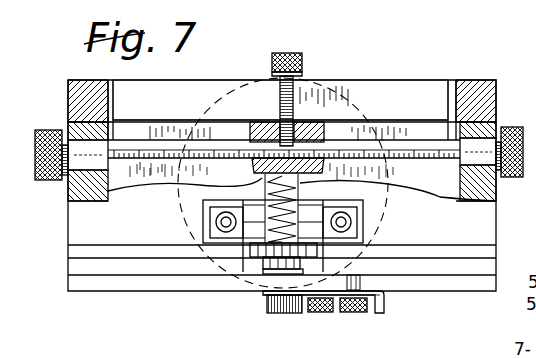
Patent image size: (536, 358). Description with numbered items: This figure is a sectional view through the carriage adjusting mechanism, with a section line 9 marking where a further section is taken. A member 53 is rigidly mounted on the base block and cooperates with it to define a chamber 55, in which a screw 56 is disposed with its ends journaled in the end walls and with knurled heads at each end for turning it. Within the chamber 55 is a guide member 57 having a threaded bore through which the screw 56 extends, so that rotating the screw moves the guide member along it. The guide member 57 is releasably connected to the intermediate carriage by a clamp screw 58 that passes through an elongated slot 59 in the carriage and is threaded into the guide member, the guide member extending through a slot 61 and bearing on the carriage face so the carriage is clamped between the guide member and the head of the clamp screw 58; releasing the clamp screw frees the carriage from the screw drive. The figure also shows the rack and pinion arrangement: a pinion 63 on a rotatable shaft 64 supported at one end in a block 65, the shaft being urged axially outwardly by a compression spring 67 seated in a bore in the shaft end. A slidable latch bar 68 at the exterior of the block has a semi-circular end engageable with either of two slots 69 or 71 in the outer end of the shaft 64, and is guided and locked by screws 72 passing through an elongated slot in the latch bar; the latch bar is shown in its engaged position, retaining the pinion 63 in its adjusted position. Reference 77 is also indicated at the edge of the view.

The section line 9- 9 is at (303, 40).
The member 53 is at (476, 123).
The chamber 55 is at (124, 190).
The screw 56 is at (406, 146).
The guide member 57 is at (308, 124).
The clamp screw 58 is at (272, 60).
The elongated slot 59 is at (381, 98).
The slot 61 is at (158, 126).
The pinion 63 is at (262, 256).
The rotatable shaft 64 is at (286, 268).
The block 65 is at (253, 227).
The compression spring 67 is at (265, 191).
The slidable latch bar 68 is at (386, 292).
The slot 69 is at (262, 284).
The slot 71 is at (272, 314).
The screws 72 is at (338, 323).
The frame body 77 is at (535, 207).